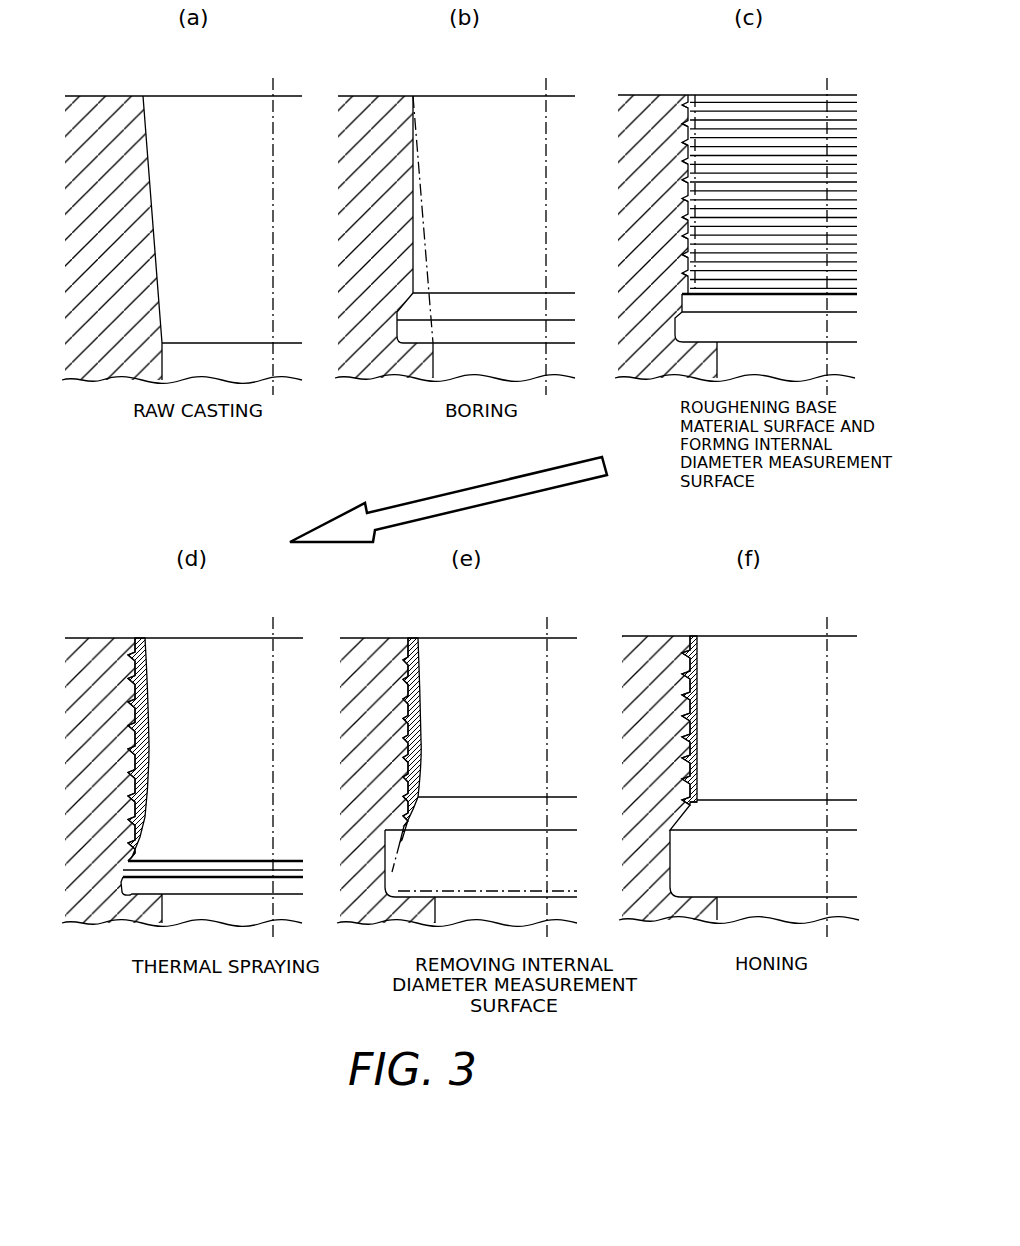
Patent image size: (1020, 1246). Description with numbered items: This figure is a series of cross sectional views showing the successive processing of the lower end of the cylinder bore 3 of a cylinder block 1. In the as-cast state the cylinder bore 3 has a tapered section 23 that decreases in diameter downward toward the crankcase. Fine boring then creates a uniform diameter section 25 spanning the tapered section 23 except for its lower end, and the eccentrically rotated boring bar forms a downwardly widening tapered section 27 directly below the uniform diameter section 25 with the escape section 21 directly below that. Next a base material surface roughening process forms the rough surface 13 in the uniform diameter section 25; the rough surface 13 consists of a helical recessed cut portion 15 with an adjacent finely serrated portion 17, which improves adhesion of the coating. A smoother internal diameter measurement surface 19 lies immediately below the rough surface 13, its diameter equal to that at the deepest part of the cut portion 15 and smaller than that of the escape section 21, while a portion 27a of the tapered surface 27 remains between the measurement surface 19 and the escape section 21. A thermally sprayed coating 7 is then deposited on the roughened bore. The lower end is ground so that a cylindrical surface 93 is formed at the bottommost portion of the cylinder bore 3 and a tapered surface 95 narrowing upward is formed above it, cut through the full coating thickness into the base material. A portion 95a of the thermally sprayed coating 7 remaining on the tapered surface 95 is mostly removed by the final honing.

The cylinder block 1 is at (101, 95).
The cylinder bore 3 is at (222, 226).
The thermally sprayed coating 7 is at (140, 637).
The rough surface 13 is at (492, 445).
The recessed cut portion 15 is at (688, 116).
The serrated portion 17 is at (698, 125).
The internal diameter measurement surface 19 is at (693, 303).
The escape section 21 is at (398, 330).
The tapered section 23 is at (147, 152).
The uniform diameter section 25 is at (415, 155).
The tapered section 27 is at (405, 308).
The portion of the tapered surface 27a is at (678, 318).
The cylindrical surface 93 is at (394, 871).
The tapered surface 95 is at (621, 795).
The portion of the thermally sprayed coating 95a is at (697, 802).